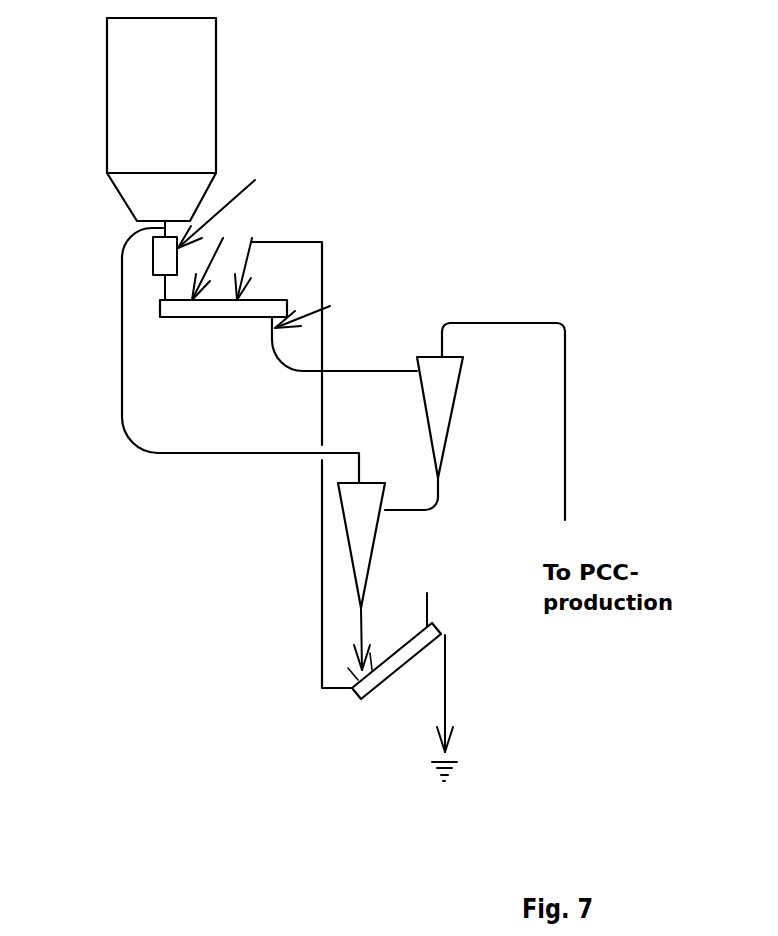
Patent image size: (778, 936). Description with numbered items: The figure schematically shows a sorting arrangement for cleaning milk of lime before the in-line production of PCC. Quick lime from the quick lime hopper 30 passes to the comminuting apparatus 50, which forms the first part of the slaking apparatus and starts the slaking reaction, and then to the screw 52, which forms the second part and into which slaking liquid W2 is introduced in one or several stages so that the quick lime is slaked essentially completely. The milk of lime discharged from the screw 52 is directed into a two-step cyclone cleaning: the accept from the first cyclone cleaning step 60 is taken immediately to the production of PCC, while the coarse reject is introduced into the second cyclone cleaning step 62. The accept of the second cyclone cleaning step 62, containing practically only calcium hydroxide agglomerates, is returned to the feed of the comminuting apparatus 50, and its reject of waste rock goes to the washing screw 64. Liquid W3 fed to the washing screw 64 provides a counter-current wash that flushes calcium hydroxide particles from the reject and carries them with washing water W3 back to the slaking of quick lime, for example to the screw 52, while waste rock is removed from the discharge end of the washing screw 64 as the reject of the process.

The quick lime hopper 30 is at (172, 116).
The comminuting apparatus 50 is at (170, 258).
The screw 52 is at (197, 313).
The first cyclone cleaning step 60 is at (443, 402).
The second cyclone cleaning step 62 is at (362, 512).
The washing screw 64 is at (357, 700).
The slaking liquid W2 is at (242, 272).
The liquid for counter-current wash W3 is at (426, 587).